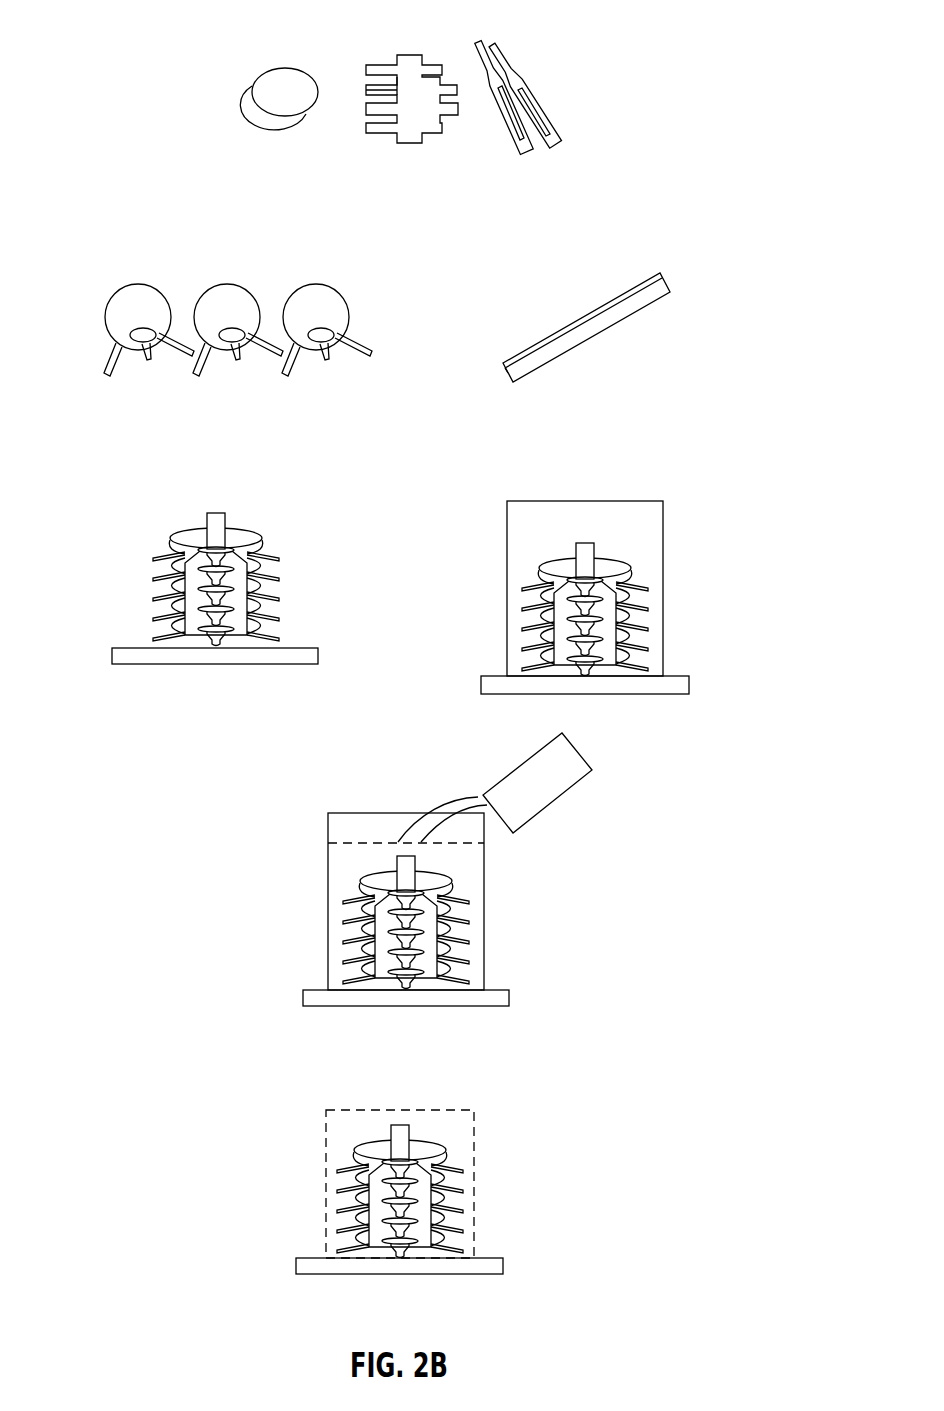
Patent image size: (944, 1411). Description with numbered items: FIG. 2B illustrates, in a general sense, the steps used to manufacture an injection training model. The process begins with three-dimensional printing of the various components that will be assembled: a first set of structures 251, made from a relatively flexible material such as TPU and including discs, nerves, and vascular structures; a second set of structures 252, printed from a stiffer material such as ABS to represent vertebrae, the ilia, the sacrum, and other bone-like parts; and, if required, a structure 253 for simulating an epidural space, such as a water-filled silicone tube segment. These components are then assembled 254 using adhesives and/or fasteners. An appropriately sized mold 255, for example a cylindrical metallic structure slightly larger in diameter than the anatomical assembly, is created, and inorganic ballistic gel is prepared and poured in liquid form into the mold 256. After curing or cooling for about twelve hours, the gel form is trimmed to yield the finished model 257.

The first set of structures 251 is at (536, 42).
The second set of structures 252 is at (153, 266).
The structure for simulating an epidural space 253 is at (636, 272).
The assembly 254 is at (168, 513).
The mold 255 is at (648, 485).
The pouring of ballistic gel into the mold 256 is at (330, 797).
The finished model 257 is at (333, 1098).